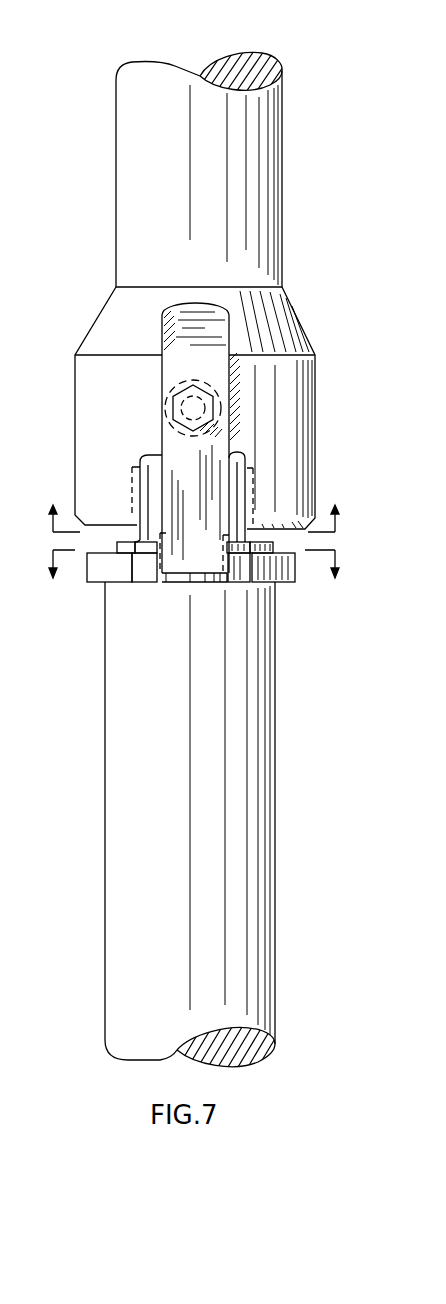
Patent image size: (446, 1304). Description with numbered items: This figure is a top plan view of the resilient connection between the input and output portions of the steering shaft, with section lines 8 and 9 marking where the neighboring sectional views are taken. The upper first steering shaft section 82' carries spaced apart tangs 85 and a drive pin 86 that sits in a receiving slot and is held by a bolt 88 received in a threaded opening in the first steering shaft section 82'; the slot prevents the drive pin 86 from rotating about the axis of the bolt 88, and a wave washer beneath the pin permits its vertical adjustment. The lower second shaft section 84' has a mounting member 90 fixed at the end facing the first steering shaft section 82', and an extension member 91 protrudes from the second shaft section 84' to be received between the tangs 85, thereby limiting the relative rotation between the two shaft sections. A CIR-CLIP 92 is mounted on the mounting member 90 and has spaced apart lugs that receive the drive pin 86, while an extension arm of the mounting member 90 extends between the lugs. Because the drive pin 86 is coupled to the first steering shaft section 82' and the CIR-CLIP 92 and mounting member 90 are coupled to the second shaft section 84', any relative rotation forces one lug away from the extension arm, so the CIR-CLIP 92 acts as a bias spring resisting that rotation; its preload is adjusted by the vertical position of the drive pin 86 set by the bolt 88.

The first steering shaft section 82' is at (221, 167).
The second shaft section 84' is at (216, 827).
The tangs 85 is at (300, 463).
The drive pin 86 is at (210, 462).
The bolt 88 is at (213, 406).
The mounting member 90 is at (265, 549).
The extension member 91 is at (233, 507).
The CIR-CLIP 92 is at (297, 580).
The section line 8- 8 is at (194, 510).
The section line 9- 9 is at (194, 576).